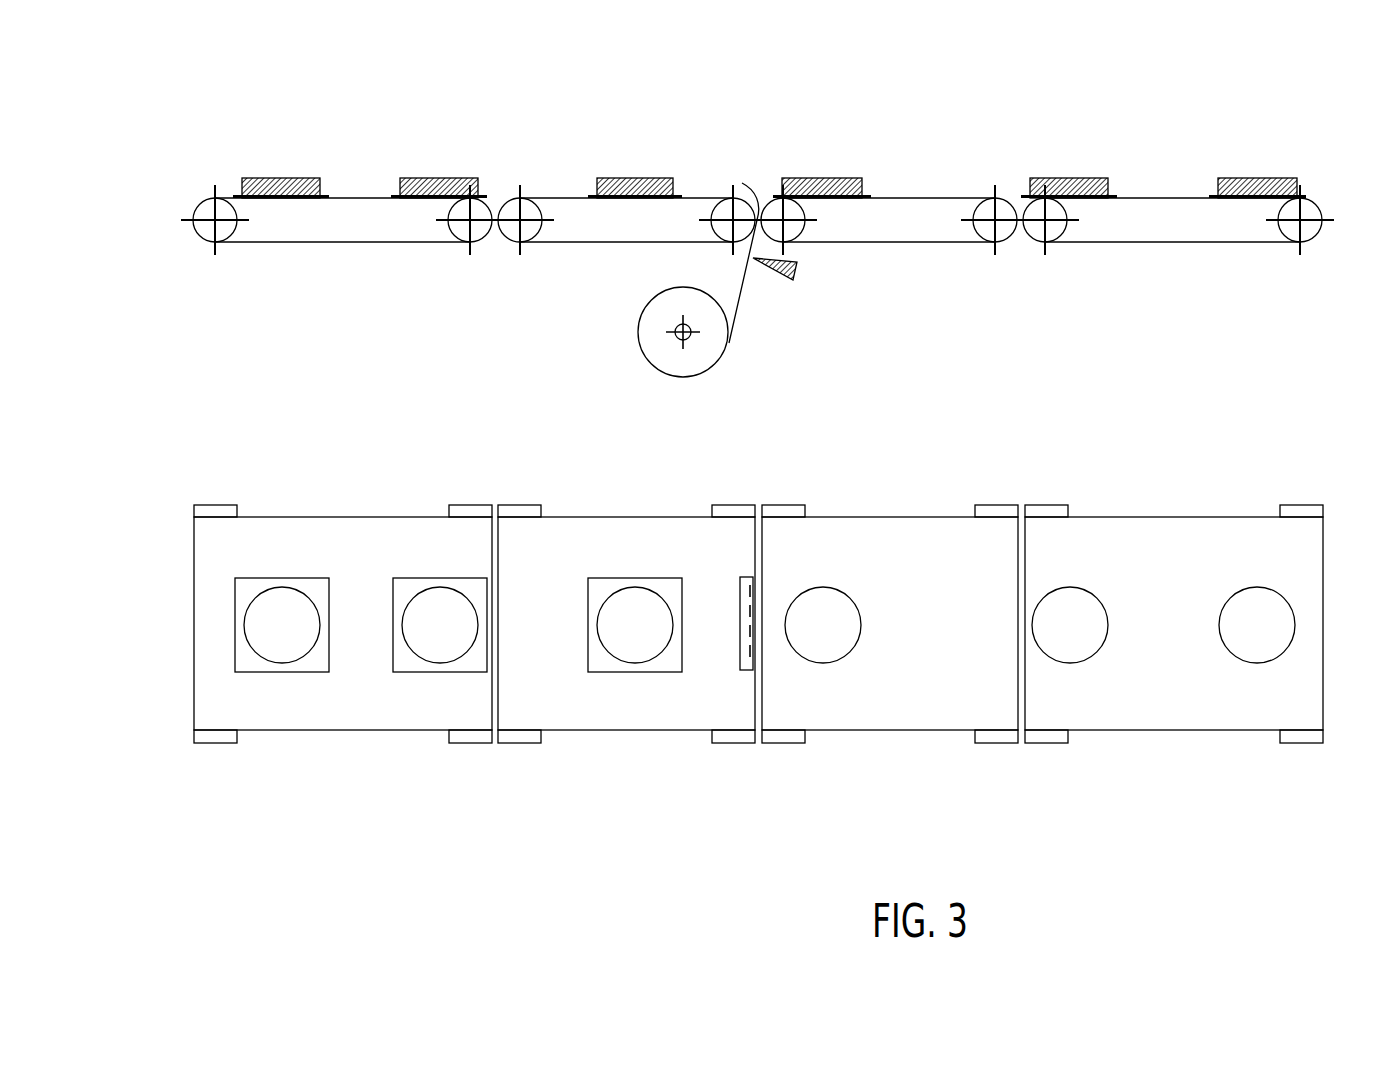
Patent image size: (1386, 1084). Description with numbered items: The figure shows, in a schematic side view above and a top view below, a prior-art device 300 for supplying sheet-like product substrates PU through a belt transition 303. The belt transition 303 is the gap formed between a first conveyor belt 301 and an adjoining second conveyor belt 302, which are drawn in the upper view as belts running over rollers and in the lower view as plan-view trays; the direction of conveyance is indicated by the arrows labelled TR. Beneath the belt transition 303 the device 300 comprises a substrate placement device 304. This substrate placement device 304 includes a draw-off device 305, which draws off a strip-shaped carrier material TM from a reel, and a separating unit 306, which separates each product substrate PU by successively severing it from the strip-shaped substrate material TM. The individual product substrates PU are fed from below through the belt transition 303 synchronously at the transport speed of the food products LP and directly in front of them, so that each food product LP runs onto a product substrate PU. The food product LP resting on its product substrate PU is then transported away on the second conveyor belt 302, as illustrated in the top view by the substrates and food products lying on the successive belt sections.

The device 300 is at (1246, 310).
The first conveyor belt 301 is at (889, 197).
The second conveyor belt 302 is at (545, 197).
The belt transition 303 is at (762, 762).
The substrate placement device 304 is at (865, 305).
The draw-off device 305 is at (734, 348).
The separating unit 306 is at (782, 290).
The strip-shaped carrier material TM is at (645, 358).
The product substrate PU is at (760, 168).
The food product LP is at (633, 603).
The transport direction TR is at (1010, 103).